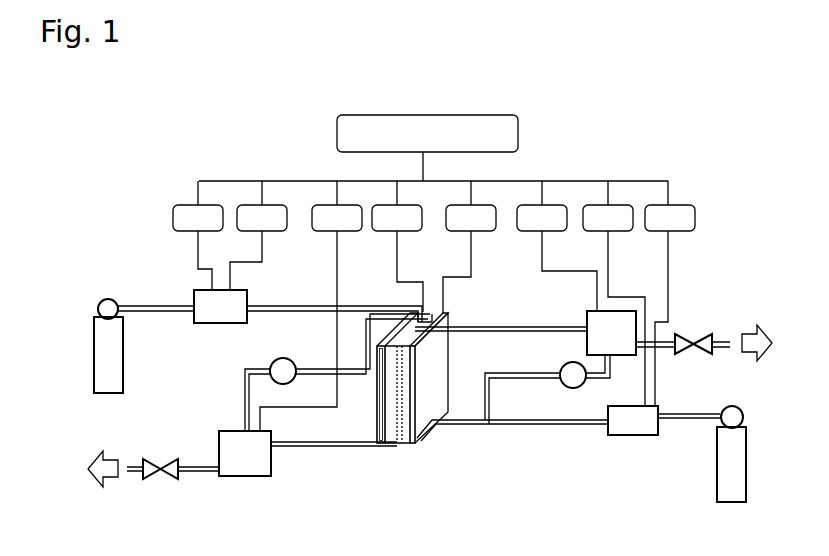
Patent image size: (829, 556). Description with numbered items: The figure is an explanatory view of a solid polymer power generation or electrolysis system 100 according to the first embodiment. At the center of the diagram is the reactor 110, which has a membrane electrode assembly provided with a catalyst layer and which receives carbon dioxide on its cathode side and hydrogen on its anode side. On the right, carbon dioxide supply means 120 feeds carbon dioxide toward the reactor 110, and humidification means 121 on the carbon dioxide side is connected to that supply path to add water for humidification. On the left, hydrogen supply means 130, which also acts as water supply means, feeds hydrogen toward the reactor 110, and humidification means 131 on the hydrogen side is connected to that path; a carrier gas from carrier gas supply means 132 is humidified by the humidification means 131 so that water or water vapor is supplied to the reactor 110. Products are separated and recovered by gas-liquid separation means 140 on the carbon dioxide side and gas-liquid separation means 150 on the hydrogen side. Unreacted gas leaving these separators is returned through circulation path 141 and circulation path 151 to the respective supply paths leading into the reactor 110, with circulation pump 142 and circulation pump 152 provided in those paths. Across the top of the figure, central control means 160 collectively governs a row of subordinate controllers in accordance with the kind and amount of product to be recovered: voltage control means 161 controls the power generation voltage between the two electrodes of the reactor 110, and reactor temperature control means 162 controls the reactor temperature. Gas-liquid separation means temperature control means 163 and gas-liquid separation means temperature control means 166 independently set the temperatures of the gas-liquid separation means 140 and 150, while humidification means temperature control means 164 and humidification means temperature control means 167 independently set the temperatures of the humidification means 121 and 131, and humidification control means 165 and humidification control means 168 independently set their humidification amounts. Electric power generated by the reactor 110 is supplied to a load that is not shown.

The solid polymer power generation or electrolysis system 100 is at (101, 184).
The reactor 110 is at (429, 449).
The carbon dioxide supply means 120 is at (727, 455).
The humidification means (carbon dioxide side) 121 is at (627, 423).
The hydrogen supply means (water supply means) 130 is at (108, 355).
The carrier gas supply means 132 is at (104, 329).
The humidification means (hydrogen side) 131 is at (221, 307).
The gas-liquid separation means (carbon dioxide side) 140 is at (612, 332).
The circulation path (carbon dioxide side) 141 is at (532, 392).
The circulation pump (carbon dioxide side) 142 is at (572, 380).
The gas-liquid separation means (hydrogen side) 150 is at (253, 452).
The circulation path (hydrogen side) 151 is at (237, 389).
The circulation pump (hydrogen side) 152 is at (283, 372).
The central control means 160 is at (433, 148).
The voltage control means 161 is at (397, 246).
The reactor temperature control means 162 is at (469, 247).
The gas-liquid separation means temperature control means (carbon dioxide side) 163 is at (557, 246).
The humidification means temperature control means (carbon dioxide side) 164 is at (614, 293).
The humidification control means (carbon dioxide side) 165 is at (670, 293).
The gas-liquid separation means temperature control means (hydrogen side) 166 is at (311, 306).
The humidification means temperature control means (hydrogen side) 167 is at (258, 235).
The humidification control means (hydrogen side) 168 is at (198, 235).